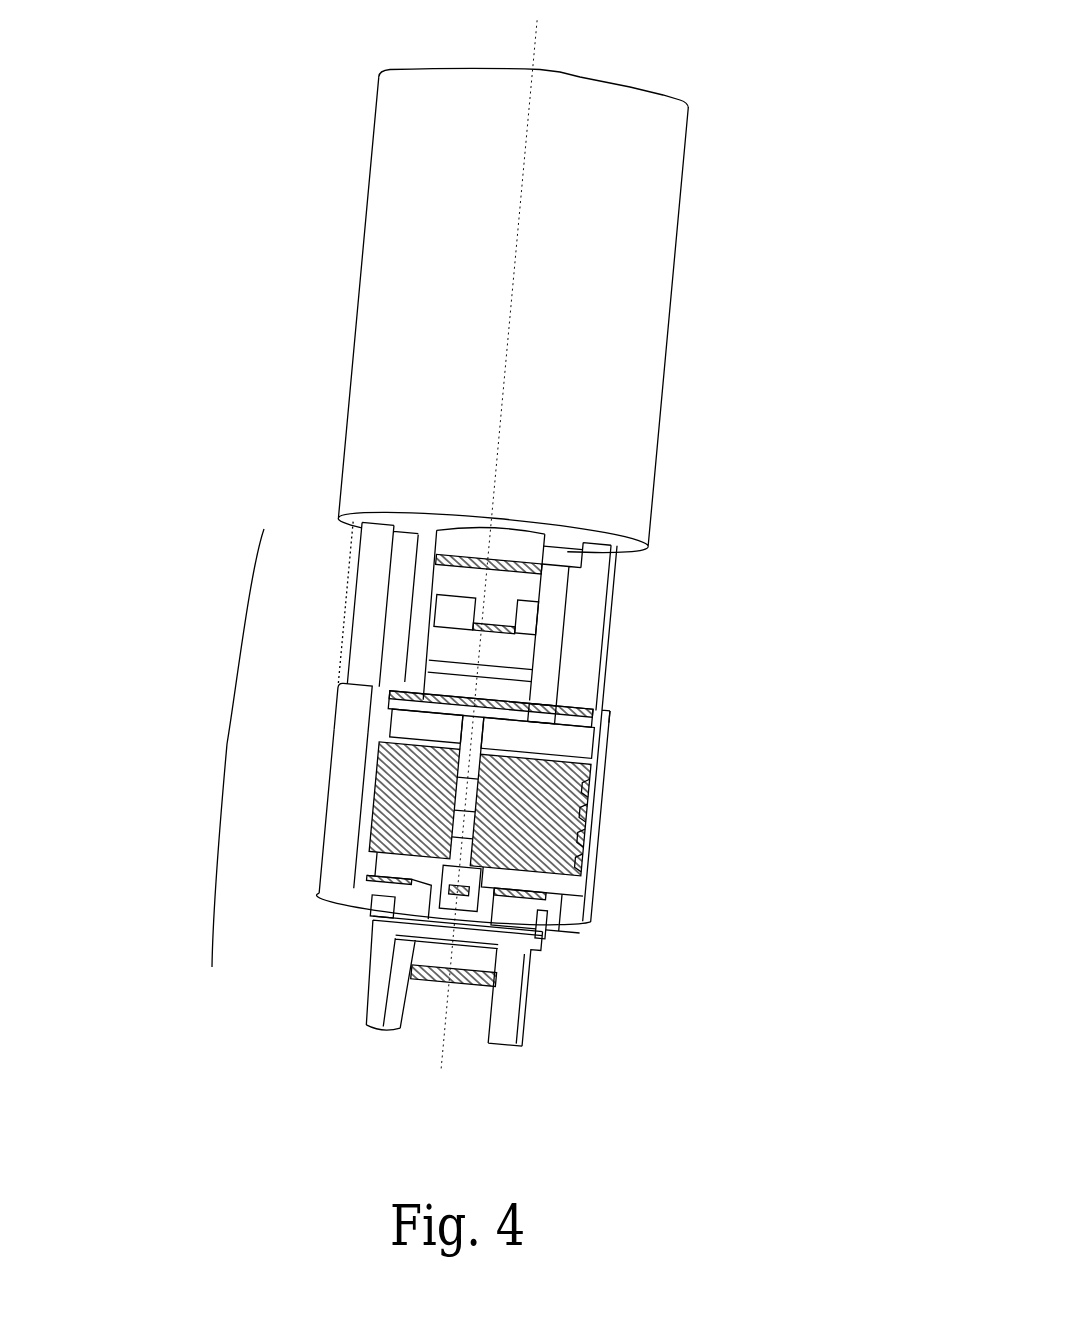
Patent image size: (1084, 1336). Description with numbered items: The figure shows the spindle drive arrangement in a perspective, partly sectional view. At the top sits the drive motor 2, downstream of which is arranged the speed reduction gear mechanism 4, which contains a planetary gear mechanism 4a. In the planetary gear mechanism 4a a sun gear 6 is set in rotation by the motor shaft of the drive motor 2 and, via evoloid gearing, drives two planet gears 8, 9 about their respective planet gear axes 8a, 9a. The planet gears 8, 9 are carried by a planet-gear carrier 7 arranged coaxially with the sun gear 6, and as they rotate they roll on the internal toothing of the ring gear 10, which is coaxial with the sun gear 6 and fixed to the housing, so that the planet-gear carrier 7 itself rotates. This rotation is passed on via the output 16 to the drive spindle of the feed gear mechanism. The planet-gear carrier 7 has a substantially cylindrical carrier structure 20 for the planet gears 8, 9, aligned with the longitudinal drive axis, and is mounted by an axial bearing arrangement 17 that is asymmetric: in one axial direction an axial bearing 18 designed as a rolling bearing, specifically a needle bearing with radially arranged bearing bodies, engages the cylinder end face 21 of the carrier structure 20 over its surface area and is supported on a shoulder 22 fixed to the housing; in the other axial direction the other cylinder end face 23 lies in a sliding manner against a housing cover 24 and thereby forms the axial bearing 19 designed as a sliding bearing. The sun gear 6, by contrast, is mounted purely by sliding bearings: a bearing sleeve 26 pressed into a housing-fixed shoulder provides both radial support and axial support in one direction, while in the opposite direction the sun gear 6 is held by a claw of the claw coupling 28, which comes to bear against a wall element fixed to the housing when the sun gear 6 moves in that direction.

The drive motor 2 is at (617, 383).
The speed reduction gear mechanism 4 is at (230, 748).
The planetary gear mechanism 4a is at (637, 733).
The sun gear 6 is at (475, 990).
The planet-gear carrier 7 is at (636, 875).
The planet gear 8 is at (363, 795).
The planet gear axis 8a is at (403, 860).
The planet gear 9 is at (600, 826).
The planet gear axis 9a is at (564, 878).
The ring gear 10 is at (583, 798).
The output 16 is at (375, 1037).
The axial bearing arrangement 17 is at (552, 715).
The axial bearing 18 is at (542, 713).
The axial bearing 19 is at (411, 888).
The carrier structure 20 is at (603, 900).
The cylinder end face 21 is at (585, 751).
The shoulder 22 is at (592, 715).
The cylinder end face 23 is at (595, 925).
The housing cover 24 is at (527, 873).
The bearing sleeve 26 is at (453, 735).
The claw coupling 28 is at (449, 634).